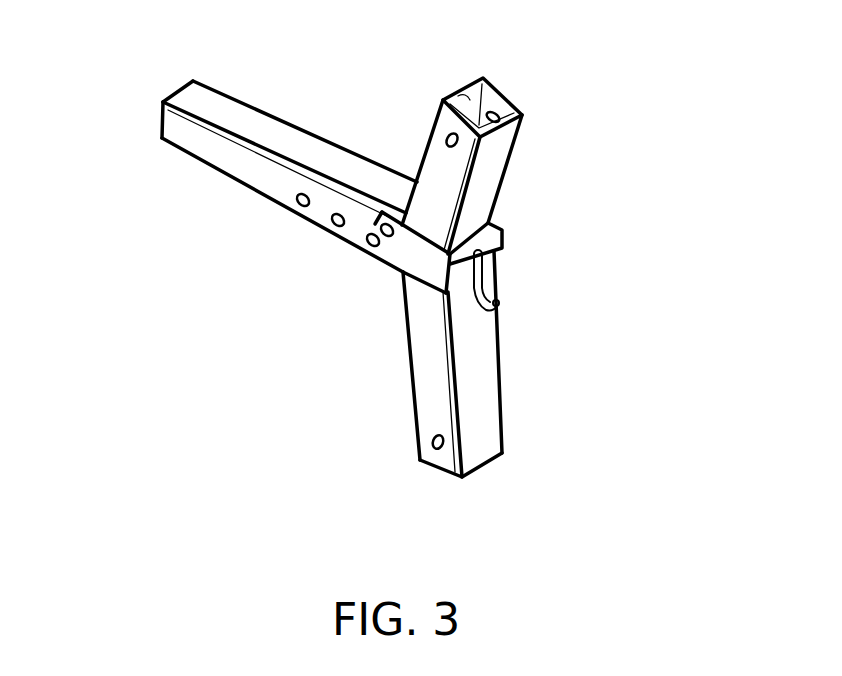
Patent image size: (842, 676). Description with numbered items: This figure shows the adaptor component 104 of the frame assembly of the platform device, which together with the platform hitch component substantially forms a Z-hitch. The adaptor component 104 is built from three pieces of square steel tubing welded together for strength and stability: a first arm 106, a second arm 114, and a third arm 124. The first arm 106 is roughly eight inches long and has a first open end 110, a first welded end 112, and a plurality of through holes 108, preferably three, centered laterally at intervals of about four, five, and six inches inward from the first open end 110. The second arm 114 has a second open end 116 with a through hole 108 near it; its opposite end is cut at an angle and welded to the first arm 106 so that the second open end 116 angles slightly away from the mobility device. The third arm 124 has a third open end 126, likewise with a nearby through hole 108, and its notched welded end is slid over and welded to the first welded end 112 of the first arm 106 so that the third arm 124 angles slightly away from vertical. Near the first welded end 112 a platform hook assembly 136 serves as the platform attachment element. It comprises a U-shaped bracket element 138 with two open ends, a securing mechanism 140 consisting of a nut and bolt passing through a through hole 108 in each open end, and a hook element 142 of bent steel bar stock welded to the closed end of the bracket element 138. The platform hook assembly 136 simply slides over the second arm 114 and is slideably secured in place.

The adaptor component 104 is at (232, 302).
The first arm 106 is at (289, 176).
The through holes 108 is at (500, 113).
The first open end 110 is at (172, 90).
The first welded end 112 is at (392, 285).
The second arm 114 is at (462, 177).
The second open end 116 is at (472, 82).
The third arm 124 is at (452, 364).
The third open end 126 is at (482, 471).
The platform hook assembly 136 is at (516, 236).
The bracket element 138 is at (412, 252).
The securing mechanism 140 is at (384, 226).
The hook element 142 is at (499, 305).